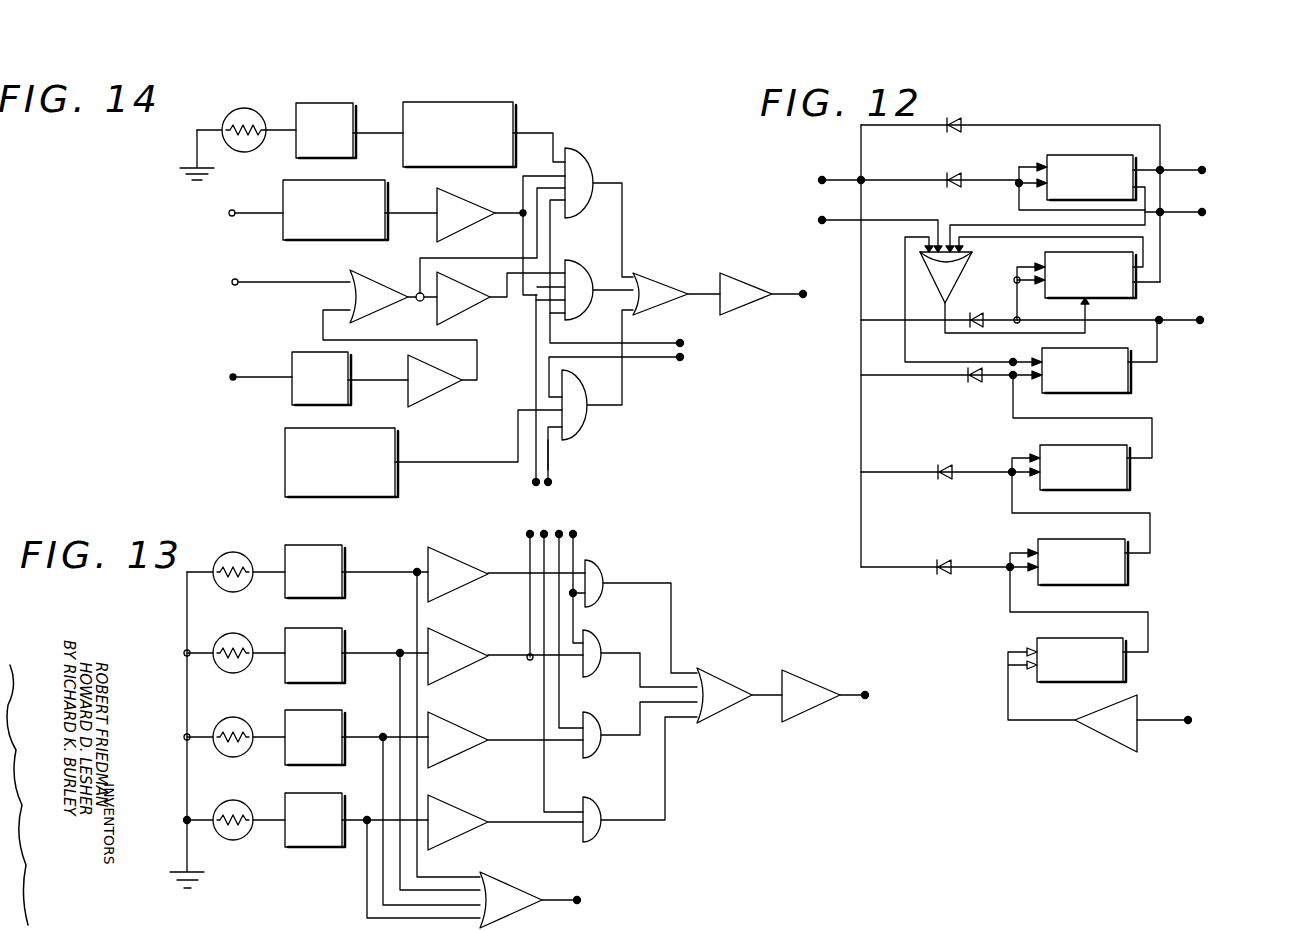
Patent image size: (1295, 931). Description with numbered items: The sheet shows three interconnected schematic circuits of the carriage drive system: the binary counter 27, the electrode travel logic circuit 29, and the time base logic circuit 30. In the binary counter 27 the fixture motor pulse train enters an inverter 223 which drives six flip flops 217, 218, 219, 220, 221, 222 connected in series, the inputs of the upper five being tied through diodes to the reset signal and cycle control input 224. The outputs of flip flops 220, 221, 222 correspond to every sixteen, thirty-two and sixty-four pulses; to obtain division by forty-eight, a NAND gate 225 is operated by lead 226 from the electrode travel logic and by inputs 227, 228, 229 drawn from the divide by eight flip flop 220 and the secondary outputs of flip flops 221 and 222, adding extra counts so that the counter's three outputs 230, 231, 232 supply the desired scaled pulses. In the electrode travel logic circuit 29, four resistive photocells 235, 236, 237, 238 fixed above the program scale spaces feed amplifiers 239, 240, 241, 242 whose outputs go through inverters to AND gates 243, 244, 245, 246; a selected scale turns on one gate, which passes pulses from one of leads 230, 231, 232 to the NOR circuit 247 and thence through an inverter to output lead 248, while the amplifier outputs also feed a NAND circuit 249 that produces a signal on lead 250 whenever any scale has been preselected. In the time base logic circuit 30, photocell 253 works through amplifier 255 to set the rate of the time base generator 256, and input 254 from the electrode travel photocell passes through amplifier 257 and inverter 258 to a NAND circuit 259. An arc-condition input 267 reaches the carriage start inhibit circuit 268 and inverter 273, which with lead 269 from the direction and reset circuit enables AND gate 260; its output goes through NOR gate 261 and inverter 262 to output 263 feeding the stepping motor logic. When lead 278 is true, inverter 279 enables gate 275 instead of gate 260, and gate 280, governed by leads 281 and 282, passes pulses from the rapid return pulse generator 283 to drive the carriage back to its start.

In FIG. 14, the photocell 253 is at (228, 116).
In FIG. 14, the amplifier 255 is at (330, 103).
In FIG. 14, the time base generator 256 is at (445, 103).
In FIG. 14, the input from arc starter circuit 267 is at (272, 197).
In FIG. 14, the carriage start inhibit circuit 268 is at (388, 206).
In FIG. 14, the inverter 273 is at (490, 192).
In FIG. 14, the output lead 250 is at (270, 281).
In FIG. 13, the output lead 250 is at (568, 900).
In FIG. 14, the NAND circuit 259 is at (410, 272).
In FIG. 14, the lead 278 is at (455, 258).
In FIG. 14, the inverter 279 is at (470, 312).
In FIG. 14, the input from electrode travel photocell 254 is at (236, 382).
In FIG. 14, the amplifier 257 is at (349, 372).
In FIG. 14, the inverter 258 is at (442, 393).
In FIG. 14, the rapid return pulse generator 283 is at (396, 490).
In FIG. 14, the lead from direction and reset circuit 269 is at (532, 481).
In FIG. 14, the lead 281 is at (549, 463).
In FIG. 14, the AND gate 260 is at (596, 167).
In FIG. 14, the AND gate 275 is at (575, 266).
In FIG. 14, the output lead 248 is at (652, 342).
In FIG. 13, the output lead 248 is at (850, 694).
In FIG. 14, the lead 282 is at (668, 360).
In FIG. 14, the gate 280 is at (572, 381).
In FIG. 14, the NOR gate 261 is at (656, 286).
In FIG. 14, the inverter 262 is at (738, 284).
In FIG. 14, the output 263 is at (797, 293).
In FIG. 14, the time base logic circuit 30 is at (642, 216).
In FIG. 12, the binary counter 27 is at (982, 585).
In FIG. 12, the reset signal and cycle control input 224 is at (848, 179).
In FIG. 12, the lead 226 is at (850, 222).
In FIG. 13, the lead 226 is at (525, 534).
In FIG. 12, the input to NAND gate 227 is at (905, 258).
In FIG. 12, the input to NAND gate 228 is at (986, 238).
In FIG. 12, the input to NAND gate 229 is at (998, 224).
In FIG. 12, the NAND gate 225 is at (957, 279).
In FIG. 12, the flip flop 222 is at (1090, 155).
In FIG. 12, the flip flop 221 is at (1130, 295).
In FIG. 12, the flip flop 220 is at (1131, 384).
In FIG. 12, the flip flop 219 is at (1130, 484).
In FIG. 12, the flip flop 218 is at (1130, 577).
In FIG. 12, the flip flop 217 is at (1130, 669).
In FIG. 12, the inverter 223 is at (1102, 746).
In FIG. 12, the output of binary counter 230 is at (1185, 320).
In FIG. 13, the output of binary counter 230 is at (545, 531).
In FIG. 12, the output of binary counter 231 is at (1192, 214).
In FIG. 13, the output of binary counter 231 is at (562, 531).
In FIG. 12, the output of binary counter 232 is at (1192, 172).
In FIG. 13, the output of binary counter 232 is at (577, 535).
In FIG. 13, the electrode travel logic circuit 29 is at (342, 872).
In FIG. 13, the photocell 235 is at (238, 553).
In FIG. 13, the photocell 236 is at (236, 636).
In FIG. 13, the photocell 237 is at (236, 720).
In FIG. 13, the photocell 238 is at (236, 803).
In FIG. 13, the amplifier 239 is at (345, 547).
In FIG. 13, the amplifier 240 is at (345, 636).
In FIG. 13, the amplifier 241 is at (345, 714).
In FIG. 13, the amplifier 242 is at (333, 797).
In FIG. 13, the AND gate 243 is at (607, 572).
In FIG. 13, the AND gate 244 is at (597, 642).
In FIG. 13, the AND gate 245 is at (597, 720).
In FIG. 13, the AND gate 246 is at (597, 805).
In FIG. 13, the NOR circuit 247 is at (760, 662).
In FIG. 13, the NAND circuit 249 is at (500, 878).